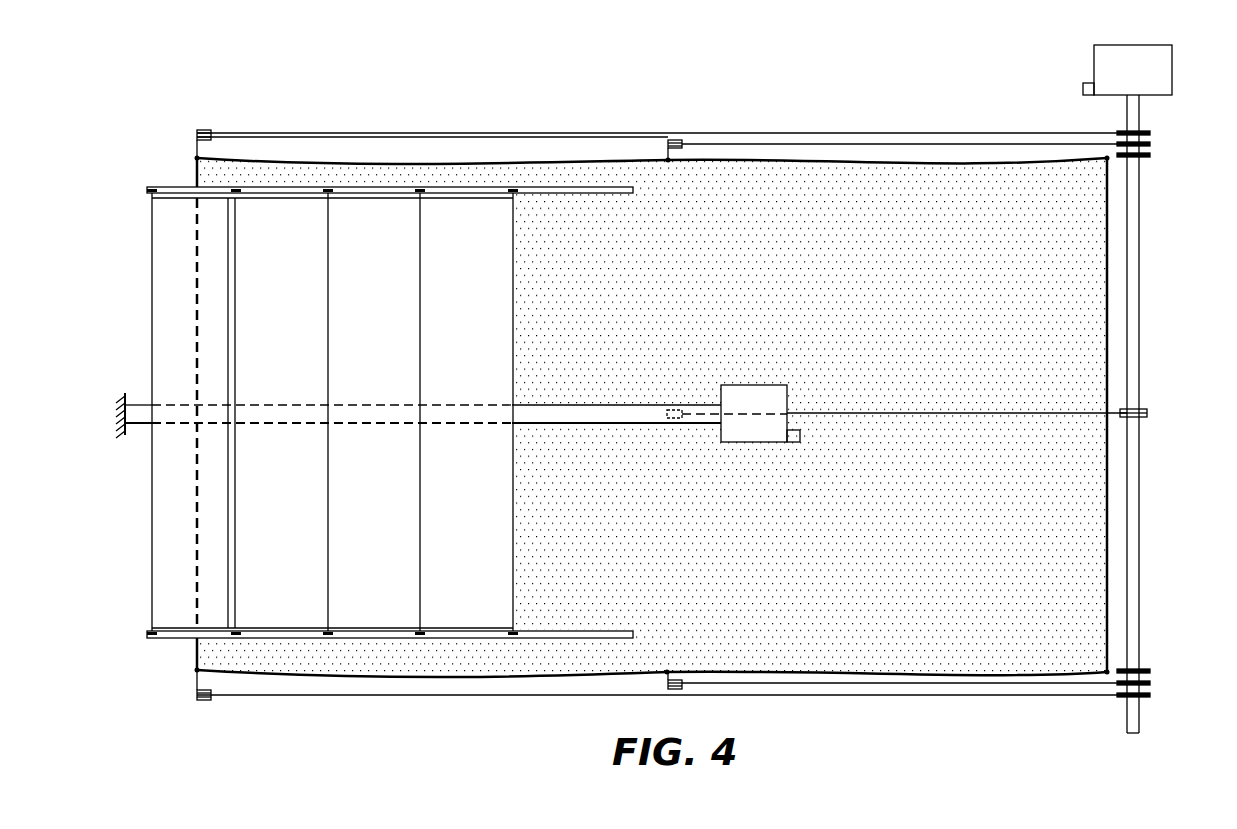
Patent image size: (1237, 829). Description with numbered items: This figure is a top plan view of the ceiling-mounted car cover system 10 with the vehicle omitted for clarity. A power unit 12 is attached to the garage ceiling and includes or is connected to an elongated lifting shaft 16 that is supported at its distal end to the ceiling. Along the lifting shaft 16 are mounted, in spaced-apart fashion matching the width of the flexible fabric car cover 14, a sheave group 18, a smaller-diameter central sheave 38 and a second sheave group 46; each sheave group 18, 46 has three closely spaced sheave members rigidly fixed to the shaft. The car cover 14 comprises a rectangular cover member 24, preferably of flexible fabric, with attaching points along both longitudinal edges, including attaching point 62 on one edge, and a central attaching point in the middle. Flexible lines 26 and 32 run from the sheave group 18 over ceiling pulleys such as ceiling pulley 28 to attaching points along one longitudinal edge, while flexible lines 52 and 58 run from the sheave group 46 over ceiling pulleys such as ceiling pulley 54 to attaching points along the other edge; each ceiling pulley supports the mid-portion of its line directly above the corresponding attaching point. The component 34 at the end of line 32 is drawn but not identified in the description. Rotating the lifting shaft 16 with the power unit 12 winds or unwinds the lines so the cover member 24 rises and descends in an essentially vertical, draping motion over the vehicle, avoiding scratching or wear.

The car cover system 10 is at (736, 115).
The power unit 12 is at (1093, 68).
The flexible fabric car cover 14 is at (950, 160).
The elongated lifting shaft 16 is at (1139, 238).
The sheave group 18 is at (1150, 145).
The rectangular cover member 24 is at (770, 299).
The flexible line 26 is at (827, 143).
The ceiling pulley 28 is at (670, 140).
The flexible line 32 is at (362, 133).
The upper end bracket 34 is at (205, 130).
The sheave 38 is at (1147, 413).
The sheave group 46 is at (1150, 683).
The flexible line 52 is at (1025, 683).
The ceiling pulley 54 is at (677, 689).
The flexible line 58 is at (463, 695).
The attaching point 62 is at (206, 700).